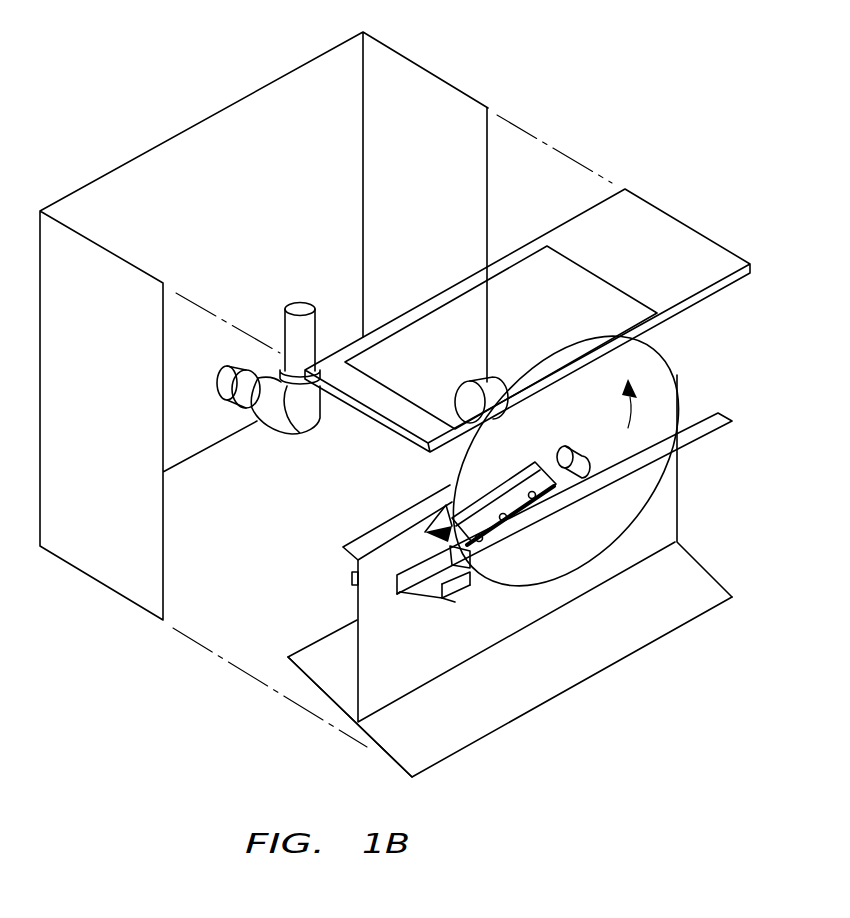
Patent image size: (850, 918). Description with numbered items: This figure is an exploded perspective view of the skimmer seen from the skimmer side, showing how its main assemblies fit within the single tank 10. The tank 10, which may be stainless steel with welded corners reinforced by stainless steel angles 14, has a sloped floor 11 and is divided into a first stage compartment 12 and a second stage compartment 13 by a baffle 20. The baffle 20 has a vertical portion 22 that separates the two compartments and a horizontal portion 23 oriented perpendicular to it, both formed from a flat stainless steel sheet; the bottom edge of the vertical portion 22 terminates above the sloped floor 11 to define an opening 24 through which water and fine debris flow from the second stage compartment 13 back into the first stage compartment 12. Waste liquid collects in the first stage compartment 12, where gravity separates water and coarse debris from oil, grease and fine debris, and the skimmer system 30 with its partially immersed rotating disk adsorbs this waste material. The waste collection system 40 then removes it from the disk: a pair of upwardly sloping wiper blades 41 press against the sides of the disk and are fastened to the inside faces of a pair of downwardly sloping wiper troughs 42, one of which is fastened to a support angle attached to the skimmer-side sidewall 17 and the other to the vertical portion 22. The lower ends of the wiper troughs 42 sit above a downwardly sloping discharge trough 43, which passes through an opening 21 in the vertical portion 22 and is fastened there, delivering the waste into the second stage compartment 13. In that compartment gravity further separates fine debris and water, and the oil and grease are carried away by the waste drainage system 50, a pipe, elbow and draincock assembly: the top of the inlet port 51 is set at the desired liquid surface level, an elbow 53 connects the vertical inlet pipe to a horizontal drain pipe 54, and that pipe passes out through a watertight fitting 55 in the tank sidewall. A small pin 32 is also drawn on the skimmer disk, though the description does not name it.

The tank 10 is at (685, 205).
The sloped floor 11 is at (437, 752).
The first stage compartment 12 is at (690, 511).
The second stage compartment 13 is at (283, 627).
The stainless steel angles 14 is at (427, 448).
The skimmer-side sidewall 17 is at (731, 418).
The baffle 20 is at (474, 628).
The opening 21 is at (397, 596).
The vertical portion 22 is at (405, 680).
The horizontal portion 23 is at (390, 528).
The opening 24 is at (353, 720).
The skimmer system 30 is at (703, 351).
The pin 32 is at (583, 452).
The waste collection system 40 is at (471, 490).
The wiper blades 41 is at (446, 505).
The wiper troughs 42 is at (471, 567).
The discharge trough 43 is at (455, 602).
The waste drainage system 50 is at (265, 341).
The inlet port 51 is at (307, 303).
The elbow 53 is at (299, 432).
The horizontal drain pipe 54 is at (243, 383).
The watertight fitting 55 is at (226, 400).